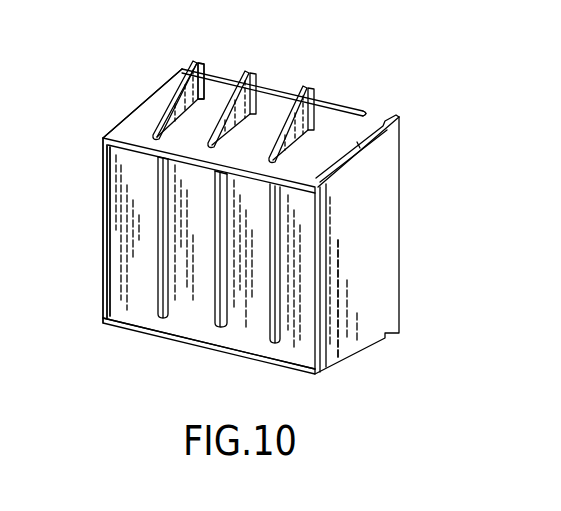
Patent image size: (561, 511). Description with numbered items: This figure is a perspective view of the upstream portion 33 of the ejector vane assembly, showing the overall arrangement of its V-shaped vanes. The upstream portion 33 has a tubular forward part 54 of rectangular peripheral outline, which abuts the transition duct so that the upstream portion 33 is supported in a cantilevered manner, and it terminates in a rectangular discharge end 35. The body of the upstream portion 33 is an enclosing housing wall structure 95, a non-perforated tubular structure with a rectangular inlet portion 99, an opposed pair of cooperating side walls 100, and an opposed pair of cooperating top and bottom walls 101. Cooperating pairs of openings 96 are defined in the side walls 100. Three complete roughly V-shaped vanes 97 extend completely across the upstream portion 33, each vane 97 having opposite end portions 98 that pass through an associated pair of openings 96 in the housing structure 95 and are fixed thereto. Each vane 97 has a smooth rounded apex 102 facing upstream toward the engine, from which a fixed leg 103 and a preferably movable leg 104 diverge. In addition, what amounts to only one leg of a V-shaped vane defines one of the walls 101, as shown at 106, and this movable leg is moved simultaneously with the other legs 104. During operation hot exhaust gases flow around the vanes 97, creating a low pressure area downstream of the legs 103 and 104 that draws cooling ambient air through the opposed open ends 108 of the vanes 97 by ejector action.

The upstream portion 33 is at (133, 103).
The discharge end 35 is at (380, 110).
The tubular forward part 54 is at (163, 324).
The housing wall structure 95 is at (103, 193).
The openings 96 is at (215, 76).
The V-shaped vane 97 is at (211, 258).
The end portions 98 is at (170, 100).
The rectangular inlet portion 99 is at (103, 290).
The side walls 100 is at (133, 123).
The top and bottom walls 101 is at (117, 172).
The apex 102 is at (217, 207).
The fixed leg 103 is at (370, 110).
The movable leg 104 is at (377, 183).
The single-leg vane 106 is at (378, 296).
The open ends 108 is at (182, 97).